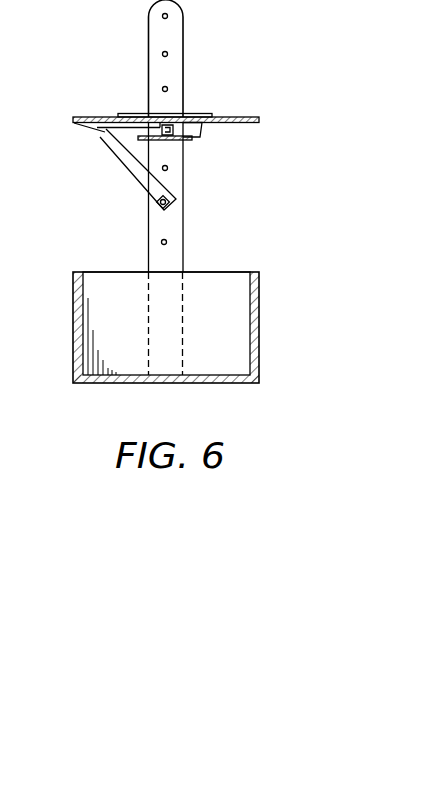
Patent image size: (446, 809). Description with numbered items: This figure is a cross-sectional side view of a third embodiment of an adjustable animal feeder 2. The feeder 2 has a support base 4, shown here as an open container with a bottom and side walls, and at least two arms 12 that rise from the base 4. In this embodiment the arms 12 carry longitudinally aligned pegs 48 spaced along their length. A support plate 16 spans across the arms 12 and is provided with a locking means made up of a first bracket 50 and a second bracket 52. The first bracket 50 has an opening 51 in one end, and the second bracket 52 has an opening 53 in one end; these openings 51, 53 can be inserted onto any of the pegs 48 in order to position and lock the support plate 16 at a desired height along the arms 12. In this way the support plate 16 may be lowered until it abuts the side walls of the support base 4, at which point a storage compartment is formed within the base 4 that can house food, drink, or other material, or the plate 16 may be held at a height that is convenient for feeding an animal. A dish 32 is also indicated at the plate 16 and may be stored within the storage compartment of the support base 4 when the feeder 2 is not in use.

The adjustable animal feeder 2 is at (201, 58).
The support base 4 is at (266, 325).
The arm 12 is at (186, 225).
The support plate 16 is at (238, 117).
The dish 32 is at (204, 133).
The pegs 48 is at (163, 89).
The first bracket 50 is at (113, 125).
The opening 51 is at (168, 140).
The second bracket 52 is at (131, 166).
The opening 53 is at (169, 204).